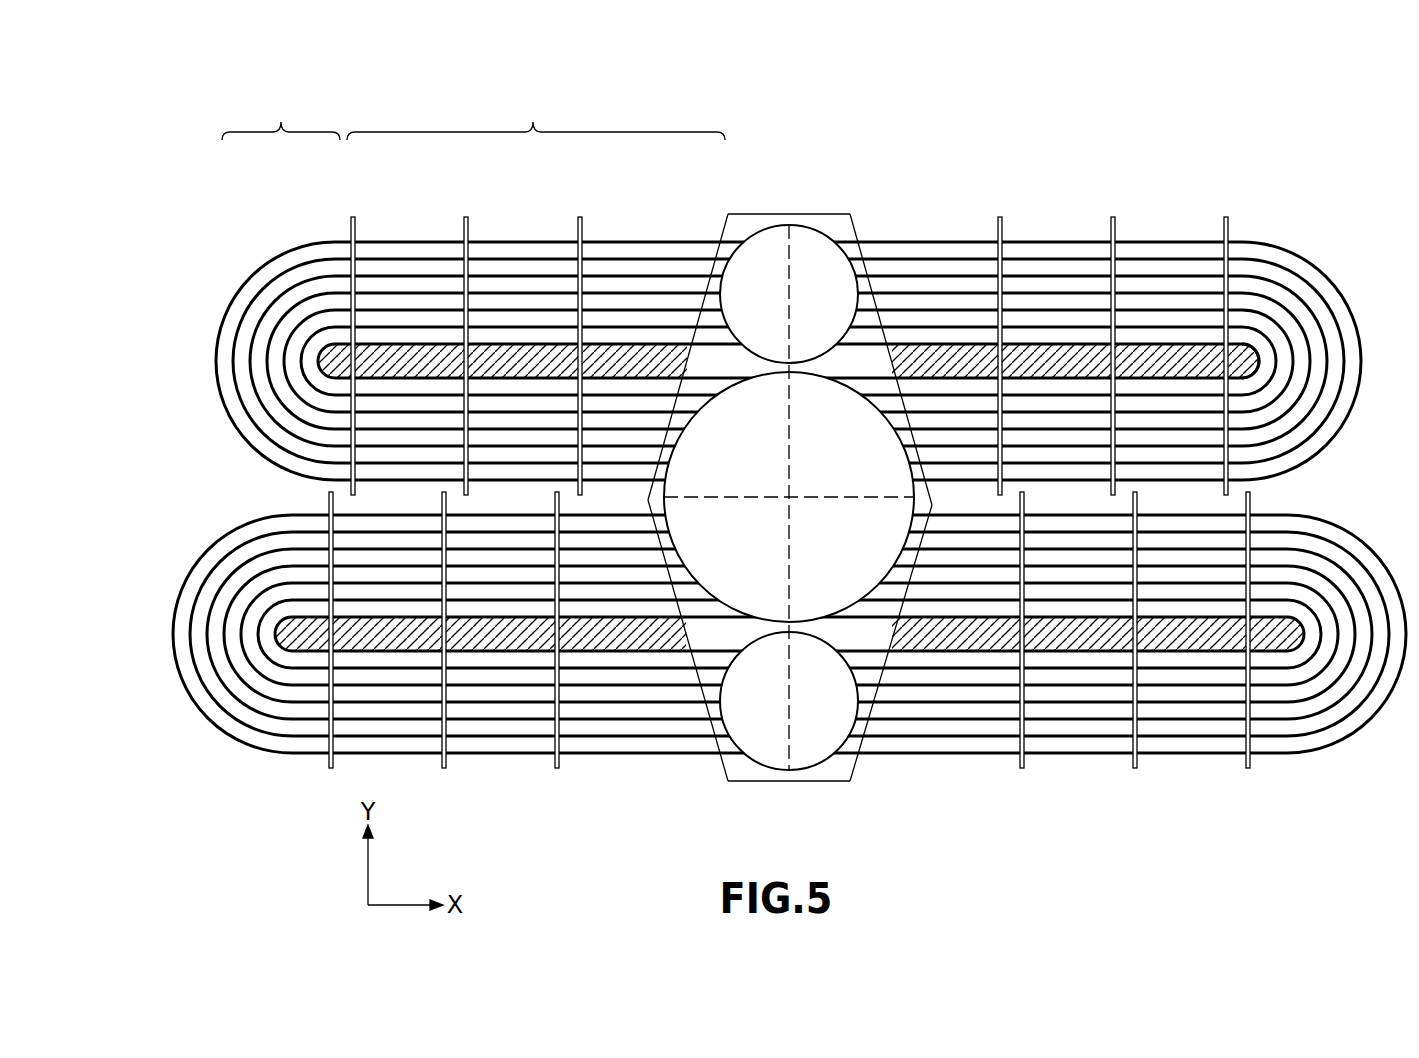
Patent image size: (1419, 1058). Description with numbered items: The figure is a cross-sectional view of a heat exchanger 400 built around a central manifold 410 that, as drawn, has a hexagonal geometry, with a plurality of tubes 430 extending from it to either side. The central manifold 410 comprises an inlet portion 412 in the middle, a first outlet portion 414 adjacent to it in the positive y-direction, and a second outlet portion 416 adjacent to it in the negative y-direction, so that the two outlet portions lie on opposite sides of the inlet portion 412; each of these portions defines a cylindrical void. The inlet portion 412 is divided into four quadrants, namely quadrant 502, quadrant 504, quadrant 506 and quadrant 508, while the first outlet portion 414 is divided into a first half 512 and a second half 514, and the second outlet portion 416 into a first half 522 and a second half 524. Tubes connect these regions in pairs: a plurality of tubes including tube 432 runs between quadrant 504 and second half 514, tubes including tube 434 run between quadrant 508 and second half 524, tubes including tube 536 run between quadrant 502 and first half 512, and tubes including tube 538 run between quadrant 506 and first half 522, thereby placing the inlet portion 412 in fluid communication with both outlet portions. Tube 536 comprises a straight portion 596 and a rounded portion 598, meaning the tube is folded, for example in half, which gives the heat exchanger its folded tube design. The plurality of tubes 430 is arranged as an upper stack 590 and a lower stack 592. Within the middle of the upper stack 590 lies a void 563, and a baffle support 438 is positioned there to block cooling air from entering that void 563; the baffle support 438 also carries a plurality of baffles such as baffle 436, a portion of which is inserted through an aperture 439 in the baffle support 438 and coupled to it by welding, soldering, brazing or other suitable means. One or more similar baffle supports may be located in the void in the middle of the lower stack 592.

The heat exchanger 400 is at (1342, 106).
The central manifold 410 is at (745, 214).
The inlet portion 412 is at (932, 507).
The first outlet portion 414 is at (835, 238).
The second outlet portion 416 is at (817, 763).
The plurality of tubes 430 is at (1129, 195).
The tube 432 is at (975, 240).
The tube 434 is at (1000, 755).
The baffle 436 is at (1225, 218).
The baffle support 438 is at (1253, 343).
The aperture 439 is at (1262, 365).
The first quadrant 502 is at (725, 466).
The second quadrant 504 is at (821, 466).
The third quadrant 506 is at (723, 562).
The fourth quadrant 508 is at (821, 562).
The first half 512 is at (738, 305).
The second half 514 is at (805, 305).
The first half 522 is at (738, 714).
The second half 524 is at (805, 714).
The tube 536 is at (648, 240).
The tube 538 is at (598, 755).
The void 563 is at (940, 352).
The upper stack 590 is at (751, 327).
The lower stack 592 is at (148, 514).
The straight portion 596 is at (536, 110).
The rounded portion 598 is at (281, 110).